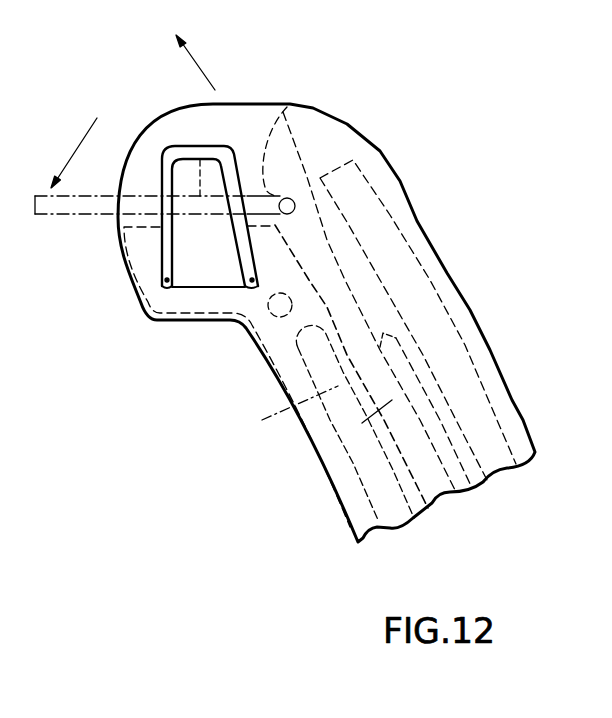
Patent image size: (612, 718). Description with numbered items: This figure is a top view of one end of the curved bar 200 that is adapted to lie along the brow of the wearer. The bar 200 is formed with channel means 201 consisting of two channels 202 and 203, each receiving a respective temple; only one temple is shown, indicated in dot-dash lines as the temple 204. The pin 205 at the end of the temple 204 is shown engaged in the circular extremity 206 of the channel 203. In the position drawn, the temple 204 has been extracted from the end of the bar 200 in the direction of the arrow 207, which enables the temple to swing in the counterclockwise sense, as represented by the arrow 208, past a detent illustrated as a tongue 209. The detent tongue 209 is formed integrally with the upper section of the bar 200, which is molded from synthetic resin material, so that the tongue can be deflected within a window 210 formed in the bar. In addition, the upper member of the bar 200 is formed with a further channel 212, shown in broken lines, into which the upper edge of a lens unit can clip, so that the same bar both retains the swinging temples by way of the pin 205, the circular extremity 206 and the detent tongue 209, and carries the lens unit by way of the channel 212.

The bar 200 is at (497, 348).
The channel means 201 is at (358, 358).
The channel 202 is at (360, 500).
The channel 203 is at (350, 430).
The temple 204 is at (51, 216).
The pin 205 is at (292, 198).
The circular extremity 206 is at (270, 136).
The arrow 207 is at (200, 62).
The arrow 208 is at (76, 143).
The detent tongue 209 is at (210, 173).
The window 210 is at (161, 241).
The channel 212 is at (420, 284).